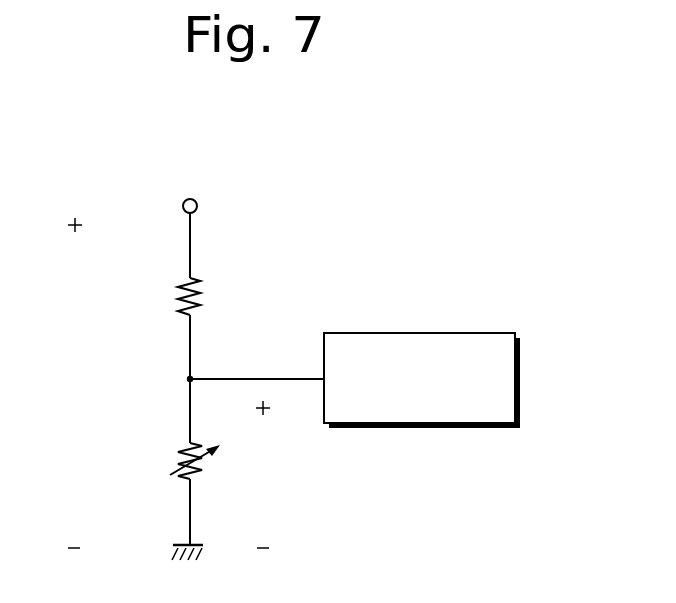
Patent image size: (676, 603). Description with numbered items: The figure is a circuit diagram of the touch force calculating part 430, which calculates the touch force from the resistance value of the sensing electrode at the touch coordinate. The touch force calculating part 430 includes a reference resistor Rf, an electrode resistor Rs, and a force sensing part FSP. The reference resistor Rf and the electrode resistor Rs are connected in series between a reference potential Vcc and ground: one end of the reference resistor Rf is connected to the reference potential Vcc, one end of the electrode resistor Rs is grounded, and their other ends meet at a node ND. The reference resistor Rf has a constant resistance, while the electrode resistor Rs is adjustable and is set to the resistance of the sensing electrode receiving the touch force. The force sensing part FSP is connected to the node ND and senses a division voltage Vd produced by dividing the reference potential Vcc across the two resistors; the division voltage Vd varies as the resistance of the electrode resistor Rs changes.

The touch force calculating part 430 is at (504, 169).
The reference resistor Rf is at (174, 296).
The electrode resistor Rs is at (184, 461).
The node ND is at (190, 379).
The force sensing part FSP is at (463, 333).
The reference potential Vcc is at (66, 383).
The division voltage Vd is at (262, 474).